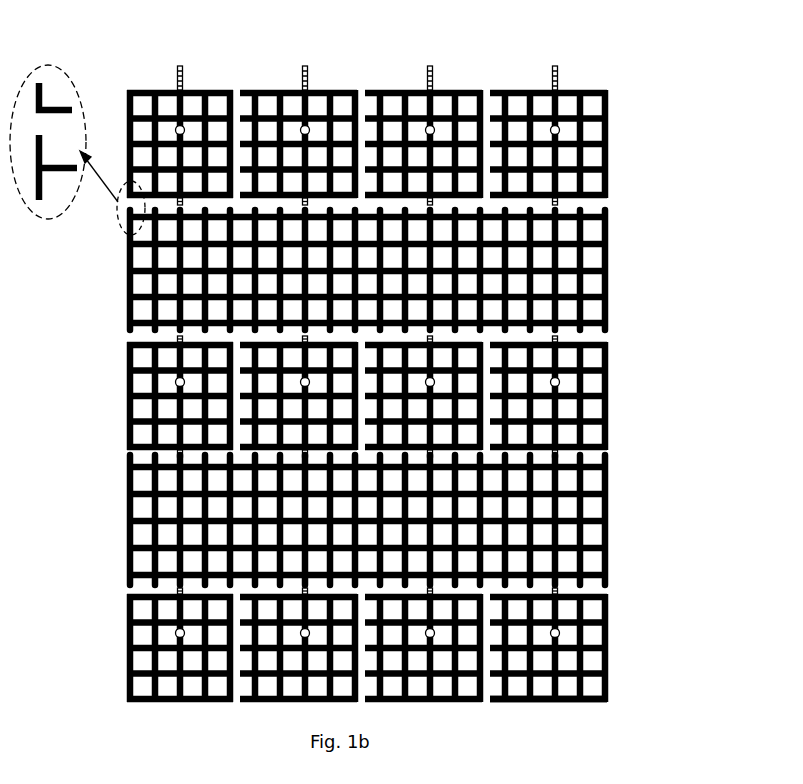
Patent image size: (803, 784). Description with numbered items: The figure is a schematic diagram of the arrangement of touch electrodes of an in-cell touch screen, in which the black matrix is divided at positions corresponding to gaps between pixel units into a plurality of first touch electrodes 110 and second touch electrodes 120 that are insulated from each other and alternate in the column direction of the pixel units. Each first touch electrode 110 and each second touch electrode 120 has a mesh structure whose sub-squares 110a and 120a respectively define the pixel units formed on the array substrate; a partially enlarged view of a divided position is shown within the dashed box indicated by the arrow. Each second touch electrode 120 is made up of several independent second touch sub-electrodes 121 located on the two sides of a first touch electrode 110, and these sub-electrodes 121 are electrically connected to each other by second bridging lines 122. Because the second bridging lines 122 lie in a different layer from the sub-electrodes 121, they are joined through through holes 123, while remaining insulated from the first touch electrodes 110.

The first touch electrode 110 is at (307, 397).
The sub-square 110a is at (75, 270).
The second touch electrode 120 is at (446, 366).
The sub-square 120a is at (607, 690).
The second touch sub-electrode 121 is at (616, 366).
The second bridging line 122 is at (558, 66).
The through hole 123 is at (562, 127).